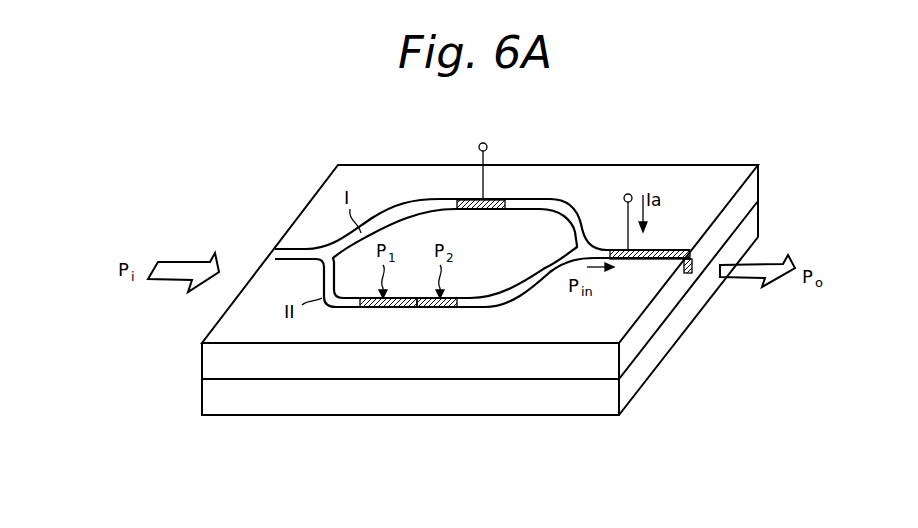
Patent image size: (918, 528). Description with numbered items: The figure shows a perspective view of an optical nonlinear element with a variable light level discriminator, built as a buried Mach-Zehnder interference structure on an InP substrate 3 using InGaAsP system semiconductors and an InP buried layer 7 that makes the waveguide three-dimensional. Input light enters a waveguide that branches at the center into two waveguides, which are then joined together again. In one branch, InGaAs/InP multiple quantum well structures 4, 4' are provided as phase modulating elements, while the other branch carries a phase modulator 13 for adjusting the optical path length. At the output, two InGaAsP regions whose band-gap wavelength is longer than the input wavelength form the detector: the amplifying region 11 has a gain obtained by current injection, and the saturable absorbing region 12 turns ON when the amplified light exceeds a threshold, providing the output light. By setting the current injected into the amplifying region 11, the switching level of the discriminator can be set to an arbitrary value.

The InP substrate 3 is at (570, 405).
The InP buried layer 7 is at (519, 368).
The multiple quantum well structure 4 is at (385, 377).
The multiple quantum well structure 4' is at (437, 376).
The phase modulator 13 is at (500, 201).
The saturable absorbing region 12 is at (663, 259).
The amplifying region 11 is at (630, 259).